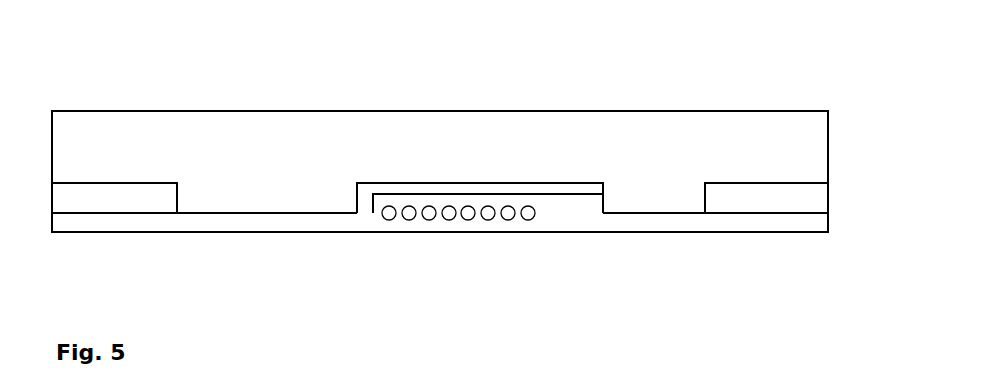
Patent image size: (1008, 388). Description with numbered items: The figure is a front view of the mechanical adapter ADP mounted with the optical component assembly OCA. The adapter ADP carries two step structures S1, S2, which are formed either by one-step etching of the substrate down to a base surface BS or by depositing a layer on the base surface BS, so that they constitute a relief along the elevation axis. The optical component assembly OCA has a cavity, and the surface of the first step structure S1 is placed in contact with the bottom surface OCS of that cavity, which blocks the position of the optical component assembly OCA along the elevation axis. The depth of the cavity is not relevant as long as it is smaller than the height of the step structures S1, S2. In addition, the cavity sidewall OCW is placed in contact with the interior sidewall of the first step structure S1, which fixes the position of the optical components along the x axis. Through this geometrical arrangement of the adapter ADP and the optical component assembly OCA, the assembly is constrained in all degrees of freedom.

The mechanical adapter ADP is at (495, 137).
The base surface BS is at (447, 182).
The optical component assembly OCA is at (215, 223).
The sidewall OCW is at (603, 202).
The bottom surface of the cavity OCS is at (647, 215).
The first step structure S1 is at (650, 195).
The second step structure S2 is at (780, 203).